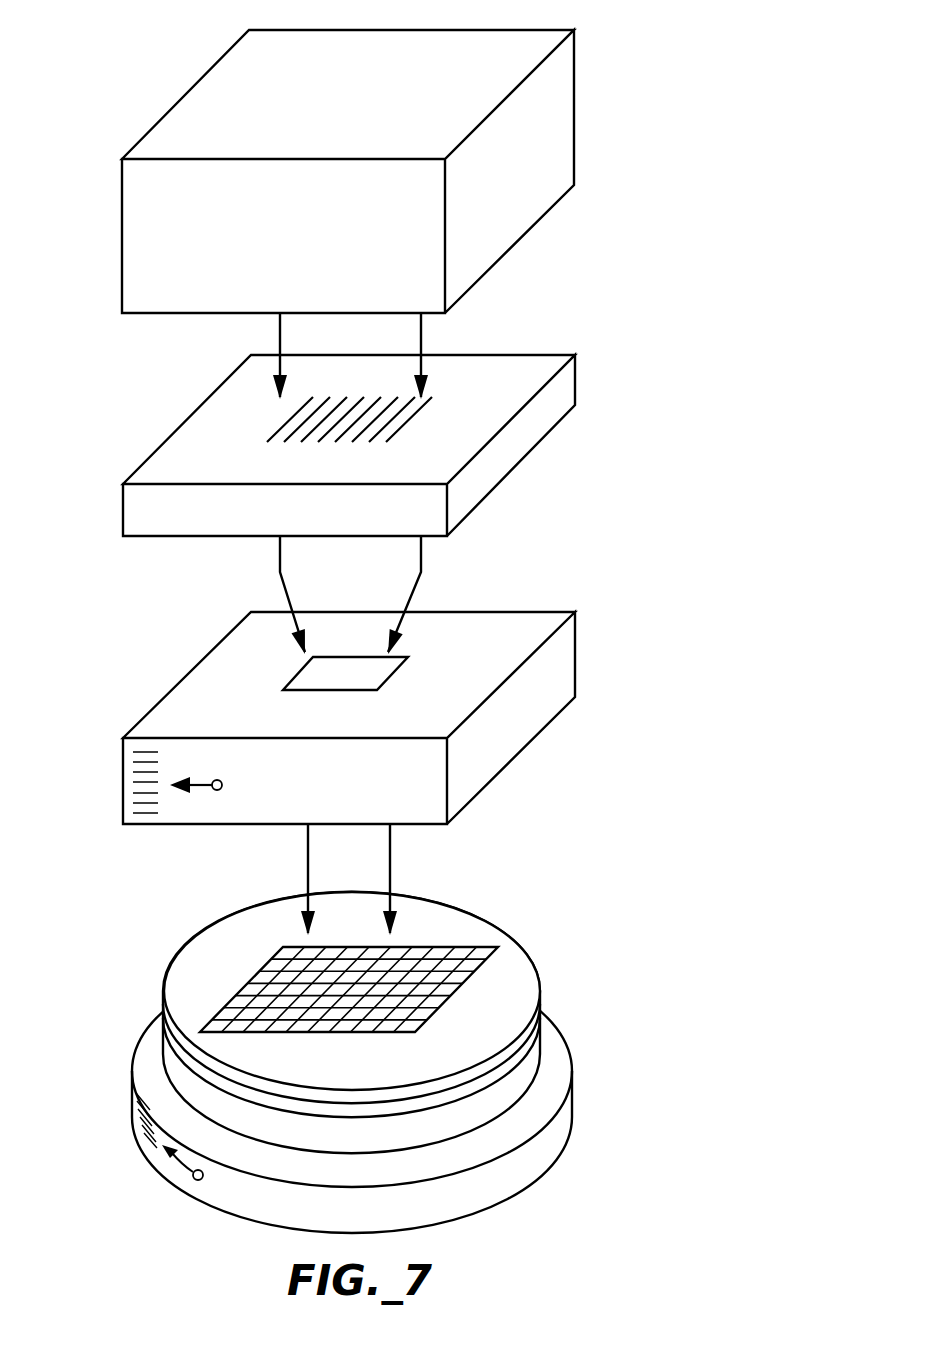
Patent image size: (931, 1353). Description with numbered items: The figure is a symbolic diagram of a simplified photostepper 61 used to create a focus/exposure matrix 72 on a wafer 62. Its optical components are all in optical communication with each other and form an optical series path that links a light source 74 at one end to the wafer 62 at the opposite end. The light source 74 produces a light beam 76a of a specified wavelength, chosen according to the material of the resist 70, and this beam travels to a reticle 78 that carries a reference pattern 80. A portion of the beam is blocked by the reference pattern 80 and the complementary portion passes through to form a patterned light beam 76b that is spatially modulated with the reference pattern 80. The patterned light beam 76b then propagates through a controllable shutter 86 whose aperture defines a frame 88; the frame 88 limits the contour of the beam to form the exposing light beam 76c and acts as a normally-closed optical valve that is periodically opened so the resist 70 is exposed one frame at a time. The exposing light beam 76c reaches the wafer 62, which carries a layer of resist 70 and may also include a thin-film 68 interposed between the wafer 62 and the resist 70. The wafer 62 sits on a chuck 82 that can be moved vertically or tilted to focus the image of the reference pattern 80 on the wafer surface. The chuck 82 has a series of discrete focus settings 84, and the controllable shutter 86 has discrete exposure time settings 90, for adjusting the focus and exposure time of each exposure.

The photostepper 61 is at (632, 42).
The light source 74 is at (575, 135).
The light beam 76a is at (278, 328).
The reticle 78 is at (577, 388).
The reference pattern 80 is at (402, 428).
The patterned light beam 76b is at (278, 540).
The controllable shutter 86 is at (572, 675).
The frame 88 is at (296, 669).
The exposure time settings 90 is at (145, 783).
The exposing light beam 76c is at (306, 853).
The focus/exposure matrix 72 is at (466, 942).
The resist 70 is at (515, 958).
The thin-film 68 is at (540, 1020).
The wafer 62 is at (536, 1057).
The chuck 82 is at (552, 1142).
The focus settings 84 is at (140, 1132).